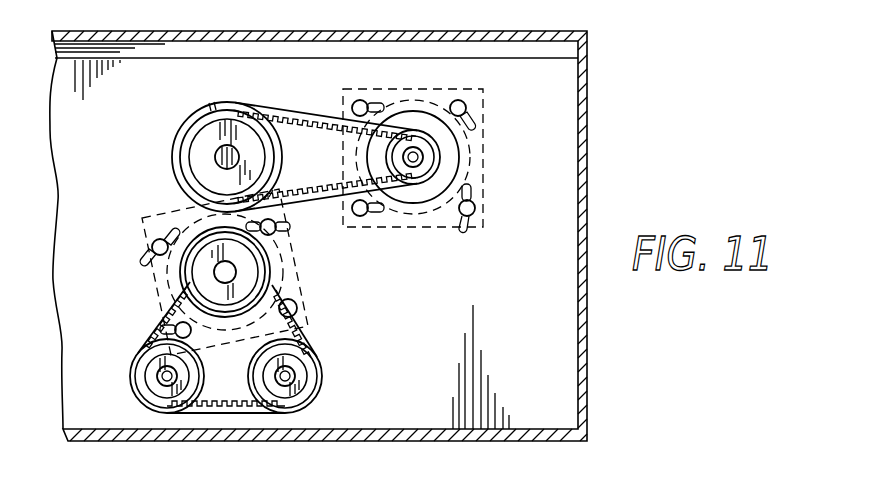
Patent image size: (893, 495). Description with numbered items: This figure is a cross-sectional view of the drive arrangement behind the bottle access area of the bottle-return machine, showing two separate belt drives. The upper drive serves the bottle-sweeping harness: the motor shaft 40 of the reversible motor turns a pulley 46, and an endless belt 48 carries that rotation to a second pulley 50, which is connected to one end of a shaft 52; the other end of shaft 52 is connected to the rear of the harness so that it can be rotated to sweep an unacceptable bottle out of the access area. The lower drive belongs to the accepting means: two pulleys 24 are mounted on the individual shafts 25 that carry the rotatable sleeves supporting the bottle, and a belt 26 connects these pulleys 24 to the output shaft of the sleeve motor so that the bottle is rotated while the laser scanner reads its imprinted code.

The pulleys 24 is at (145, 352).
The shafts 25 is at (158, 377).
The belt 26 is at (273, 282).
The motor shaft 40 is at (216, 151).
The pulley 46 is at (172, 157).
The endless belt 48 is at (320, 209).
The pulley 50 is at (432, 151).
The shaft 52 is at (420, 160).